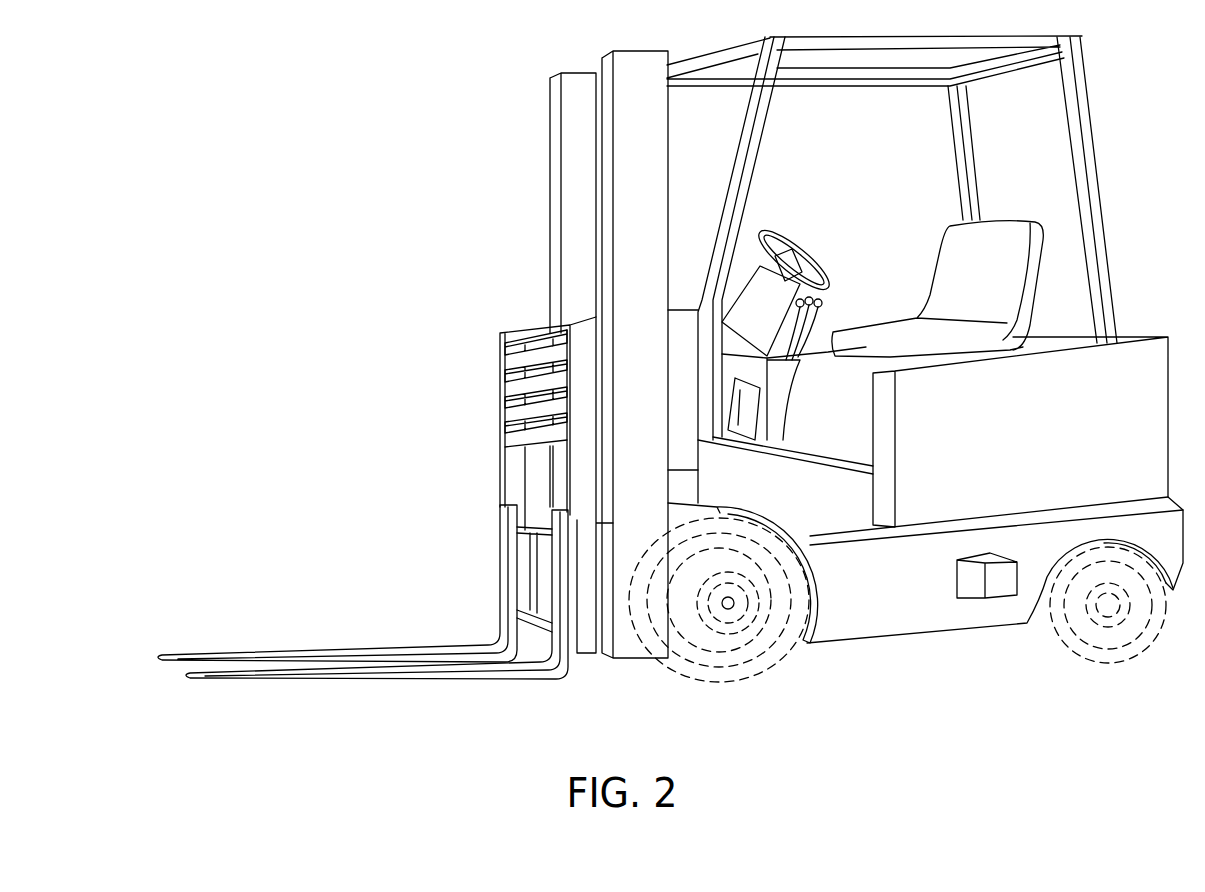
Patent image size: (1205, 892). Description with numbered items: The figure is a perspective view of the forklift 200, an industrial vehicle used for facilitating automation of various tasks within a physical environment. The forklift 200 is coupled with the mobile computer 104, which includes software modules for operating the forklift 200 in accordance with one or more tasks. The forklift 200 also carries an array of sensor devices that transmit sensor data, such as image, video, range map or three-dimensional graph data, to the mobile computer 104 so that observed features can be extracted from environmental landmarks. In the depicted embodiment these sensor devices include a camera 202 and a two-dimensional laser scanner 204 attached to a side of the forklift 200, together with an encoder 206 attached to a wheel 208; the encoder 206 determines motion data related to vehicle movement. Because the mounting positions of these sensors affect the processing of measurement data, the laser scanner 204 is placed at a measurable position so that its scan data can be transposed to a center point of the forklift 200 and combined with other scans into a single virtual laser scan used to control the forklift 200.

The forklift 200 is at (325, 125).
The mobile computer 104 is at (533, 473).
The camera 202 is at (522, 520).
The two-dimensional laser scanner 204 is at (998, 587).
The encoder 206 is at (730, 609).
The wheel 208 is at (648, 625).